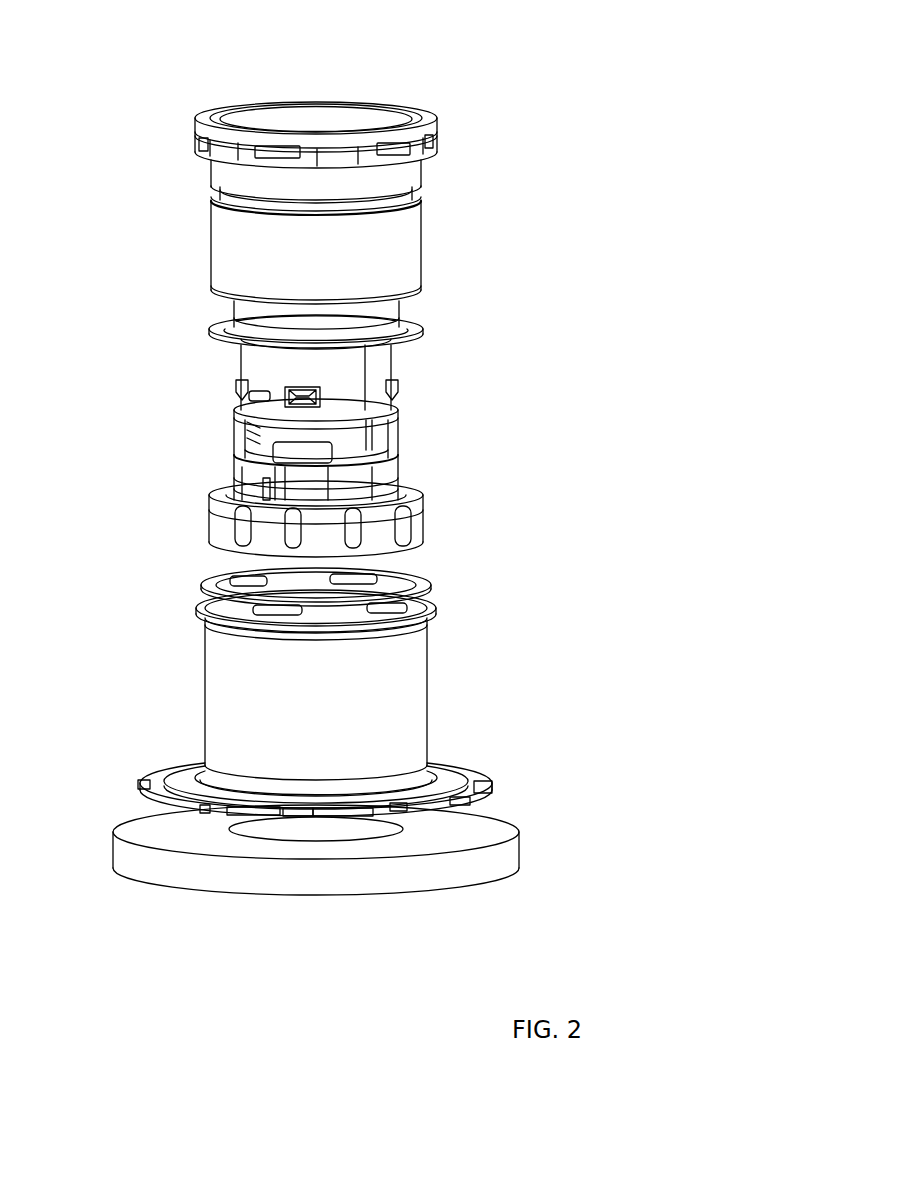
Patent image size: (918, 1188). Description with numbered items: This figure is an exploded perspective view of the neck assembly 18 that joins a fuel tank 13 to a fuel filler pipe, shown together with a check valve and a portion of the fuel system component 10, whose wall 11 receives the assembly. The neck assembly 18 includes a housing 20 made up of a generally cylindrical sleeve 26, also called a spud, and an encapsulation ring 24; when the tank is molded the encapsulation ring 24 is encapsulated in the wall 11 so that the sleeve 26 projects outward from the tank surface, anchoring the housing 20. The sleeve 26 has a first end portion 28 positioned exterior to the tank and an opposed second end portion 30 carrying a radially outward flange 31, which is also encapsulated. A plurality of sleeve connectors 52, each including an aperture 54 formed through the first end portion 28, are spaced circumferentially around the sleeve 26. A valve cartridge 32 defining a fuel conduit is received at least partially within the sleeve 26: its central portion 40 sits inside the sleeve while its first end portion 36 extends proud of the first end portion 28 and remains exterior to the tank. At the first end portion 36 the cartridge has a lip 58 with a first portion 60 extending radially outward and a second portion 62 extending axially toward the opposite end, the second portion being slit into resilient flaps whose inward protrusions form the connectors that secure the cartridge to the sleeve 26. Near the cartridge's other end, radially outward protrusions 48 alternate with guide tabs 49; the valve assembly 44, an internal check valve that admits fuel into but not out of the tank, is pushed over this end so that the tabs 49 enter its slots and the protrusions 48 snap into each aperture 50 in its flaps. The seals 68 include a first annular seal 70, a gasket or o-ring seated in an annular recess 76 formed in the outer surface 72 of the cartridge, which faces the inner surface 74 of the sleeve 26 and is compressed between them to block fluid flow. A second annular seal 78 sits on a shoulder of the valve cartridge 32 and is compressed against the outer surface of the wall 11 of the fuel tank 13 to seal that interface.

The fuel system component 10 is at (492, 862).
The wall 11 is at (497, 827).
The fuel tank 13 is at (382, 852).
The neck assembly 18 is at (743, 353).
The housing 20 is at (428, 693).
The encapsulation ring 24 is at (472, 783).
The sleeve 26 is at (415, 648).
The first end portion 28 is at (433, 588).
The second end portion 30 is at (420, 770).
The flange 31 is at (445, 762).
The valve cartridge 32 is at (387, 365).
The first end portion 36 is at (438, 125).
The central portion 40 is at (413, 258).
The valve assembly 44 is at (390, 470).
The protrusions 48 is at (290, 390).
The guide tabs 49 is at (243, 390).
The aperture 50 is at (295, 448).
The sleeve connectors 52 is at (224, 611).
The aperture 54 is at (203, 600).
The lip 58 is at (203, 142).
The first portion 60 is at (210, 113).
The second portion 62 is at (195, 153).
The seals 68 is at (341, 417).
The first annular seal 70 is at (420, 322).
The outer surface 72 is at (248, 310).
The inner surface 74 is at (220, 577).
The annular recess 76 is at (420, 193).
The second annular seal 78 is at (413, 503).